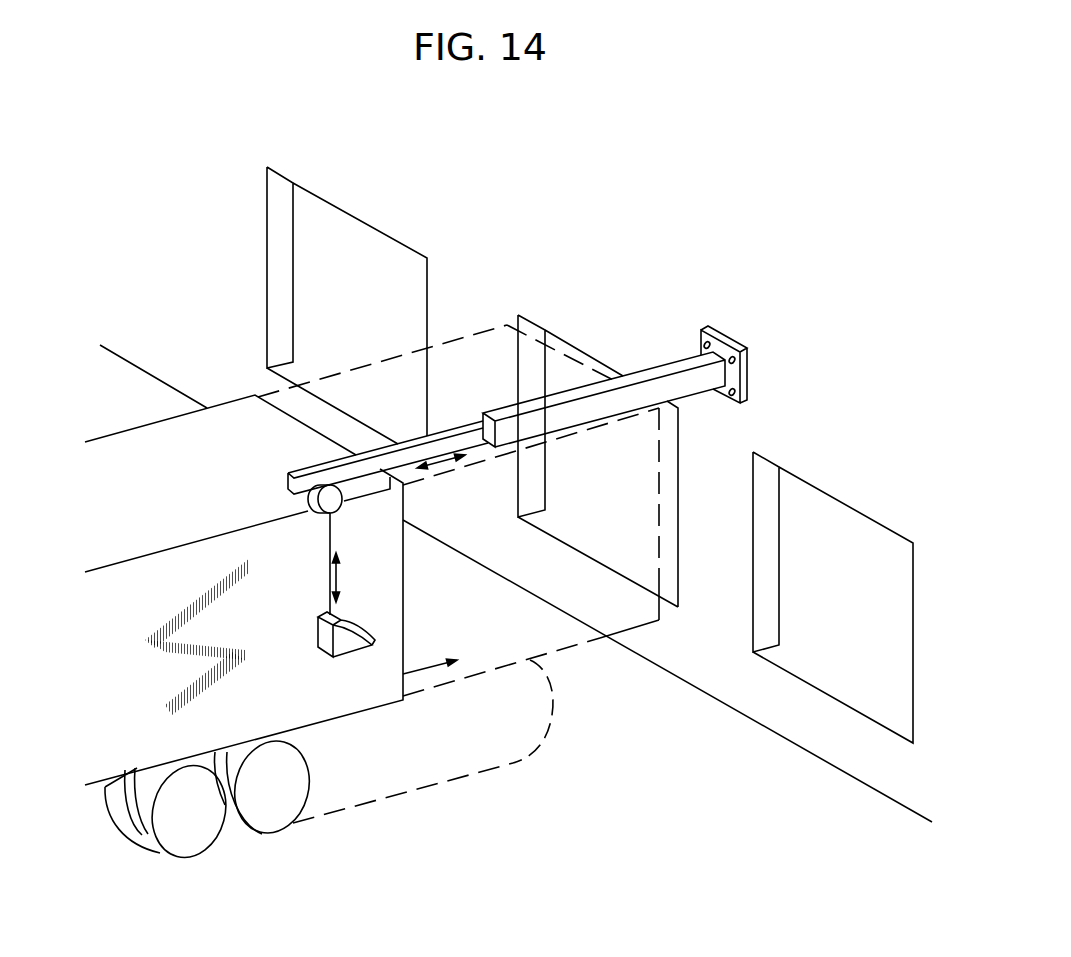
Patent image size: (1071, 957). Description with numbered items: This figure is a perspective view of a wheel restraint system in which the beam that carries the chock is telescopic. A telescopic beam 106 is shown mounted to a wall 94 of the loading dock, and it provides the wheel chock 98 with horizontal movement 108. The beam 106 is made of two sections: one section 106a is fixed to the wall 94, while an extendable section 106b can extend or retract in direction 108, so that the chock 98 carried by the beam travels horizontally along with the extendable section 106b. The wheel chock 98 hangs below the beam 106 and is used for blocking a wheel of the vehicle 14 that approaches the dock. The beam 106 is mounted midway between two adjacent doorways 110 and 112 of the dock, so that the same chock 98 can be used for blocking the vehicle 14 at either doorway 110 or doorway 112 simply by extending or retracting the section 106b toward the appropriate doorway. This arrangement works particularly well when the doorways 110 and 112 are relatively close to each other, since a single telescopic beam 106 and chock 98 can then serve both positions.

The vehicle 14 is at (118, 431).
The wall 94 is at (707, 665).
The wheel chock 98 is at (320, 637).
The telescopic beam 106 is at (510, 412).
The section of beam 106a is at (655, 373).
The extendable section 106b is at (308, 470).
The horizontal movement 108 is at (449, 466).
The doorway 110 is at (633, 465).
The doorway 112 is at (818, 577).